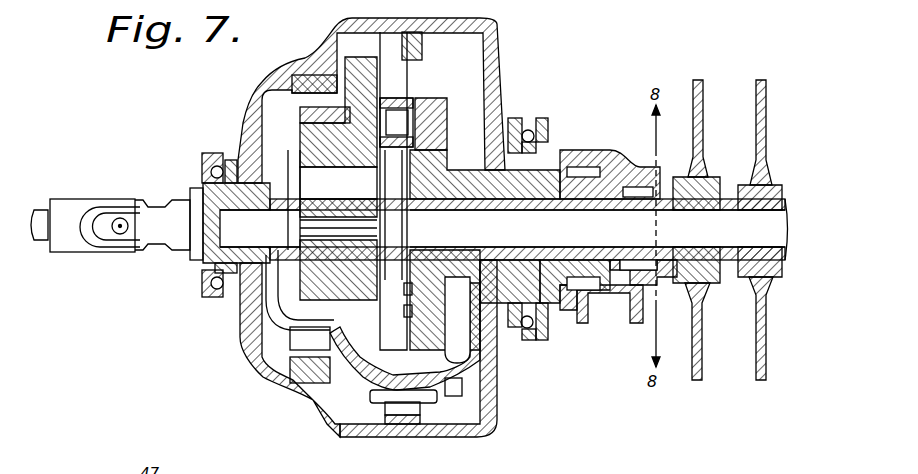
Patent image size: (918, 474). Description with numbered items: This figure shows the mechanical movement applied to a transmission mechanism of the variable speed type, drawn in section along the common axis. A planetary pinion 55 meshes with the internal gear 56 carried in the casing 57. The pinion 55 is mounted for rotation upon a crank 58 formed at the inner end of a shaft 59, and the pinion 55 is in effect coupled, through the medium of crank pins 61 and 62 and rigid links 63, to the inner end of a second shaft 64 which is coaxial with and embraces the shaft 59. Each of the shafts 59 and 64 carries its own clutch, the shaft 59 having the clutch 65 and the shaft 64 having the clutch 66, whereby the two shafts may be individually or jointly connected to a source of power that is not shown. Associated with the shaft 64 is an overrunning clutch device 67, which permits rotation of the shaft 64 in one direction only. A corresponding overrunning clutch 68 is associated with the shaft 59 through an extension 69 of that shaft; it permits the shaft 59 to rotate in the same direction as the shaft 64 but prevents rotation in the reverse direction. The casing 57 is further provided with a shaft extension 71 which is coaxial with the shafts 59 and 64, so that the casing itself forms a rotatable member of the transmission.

The planetary pinion 55 is at (302, 110).
The internal gear 56 is at (310, 374).
The casing 57 is at (248, 340).
The crank 58 is at (348, 194).
The shaft 59 is at (550, 236).
The crank pin 61 is at (395, 90).
The crank pin 62 is at (400, 125).
The rigid link 63 is at (408, 90).
The shaft 64 is at (535, 200).
The clutch 65 is at (765, 82).
The clutch 66 is at (702, 82).
The overrunning clutch device 67 is at (640, 190).
The overrunning clutch 68 is at (585, 168).
The extension 69 is at (478, 362).
The shaft extension 71 is at (162, 247).